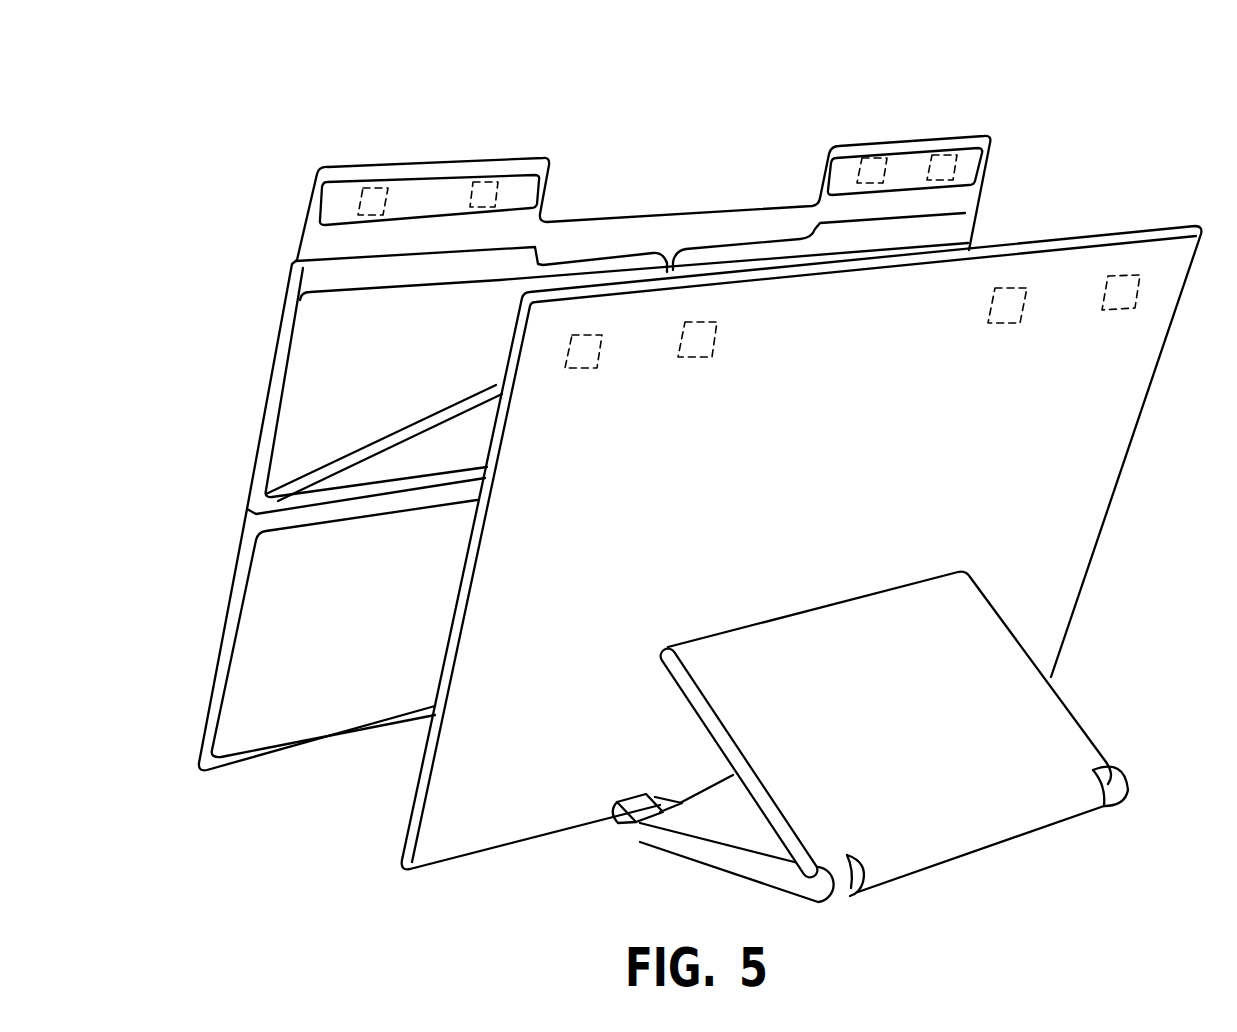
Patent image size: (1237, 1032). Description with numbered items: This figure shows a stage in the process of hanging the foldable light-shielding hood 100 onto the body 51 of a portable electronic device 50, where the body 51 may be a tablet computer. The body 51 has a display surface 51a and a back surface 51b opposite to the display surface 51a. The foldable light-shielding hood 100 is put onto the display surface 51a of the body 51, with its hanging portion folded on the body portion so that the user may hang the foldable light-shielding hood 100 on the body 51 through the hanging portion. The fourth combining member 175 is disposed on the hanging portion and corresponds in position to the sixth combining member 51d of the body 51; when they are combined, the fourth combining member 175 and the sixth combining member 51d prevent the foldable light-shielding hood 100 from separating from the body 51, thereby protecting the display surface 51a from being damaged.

The portable electronic device 50 is at (1201, 897).
The foldable light-shielding hood 100 is at (322, 116).
The body 51 is at (468, 820).
The display surface 51a is at (403, 824).
The back surface 51b is at (565, 745).
The sixth combining member 51d is at (680, 352).
The fourth combining member 175 is at (480, 240).